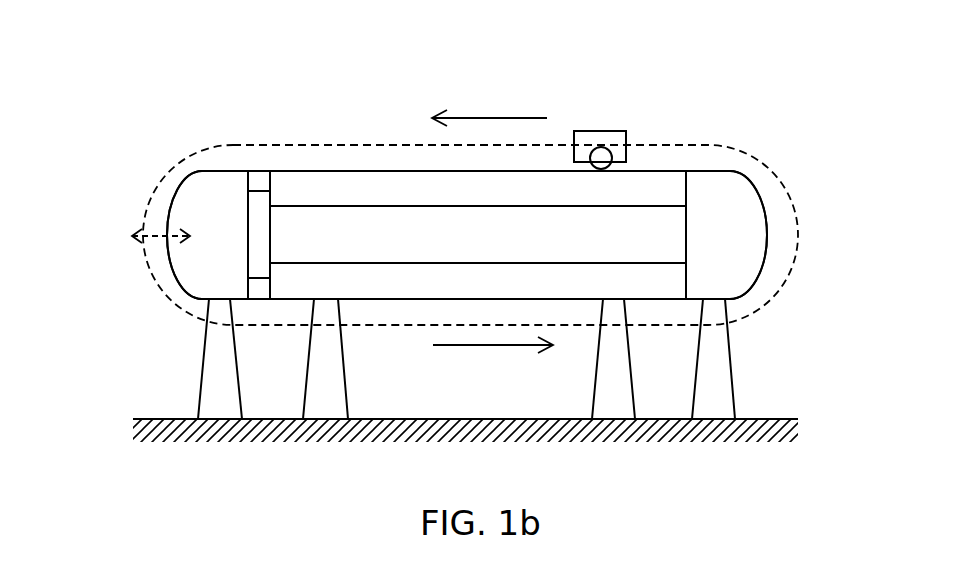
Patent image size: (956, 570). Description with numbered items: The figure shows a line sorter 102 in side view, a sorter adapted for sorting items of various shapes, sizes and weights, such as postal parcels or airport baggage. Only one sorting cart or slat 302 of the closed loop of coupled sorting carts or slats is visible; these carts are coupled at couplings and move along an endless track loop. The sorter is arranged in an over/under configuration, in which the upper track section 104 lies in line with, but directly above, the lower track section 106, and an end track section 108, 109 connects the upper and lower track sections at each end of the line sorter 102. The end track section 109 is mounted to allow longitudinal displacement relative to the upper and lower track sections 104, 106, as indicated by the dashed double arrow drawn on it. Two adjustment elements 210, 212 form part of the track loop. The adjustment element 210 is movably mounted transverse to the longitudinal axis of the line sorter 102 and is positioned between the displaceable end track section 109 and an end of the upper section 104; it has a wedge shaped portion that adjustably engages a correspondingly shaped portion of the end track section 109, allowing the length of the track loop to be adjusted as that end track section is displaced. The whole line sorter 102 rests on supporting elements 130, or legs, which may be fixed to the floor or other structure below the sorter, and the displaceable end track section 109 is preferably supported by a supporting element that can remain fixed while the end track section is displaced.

The line sorter 102 is at (728, 78).
The upper track section 104 is at (319, 192).
The lower track section 106 is at (358, 283).
The end track section 108 is at (721, 207).
The displaceable end track section 109 is at (224, 218).
The supporting elements 130 is at (218, 362).
The adjustment element 210 is at (260, 182).
The adjustment element 212 is at (260, 287).
The sorting cart or slat 302 is at (597, 137).